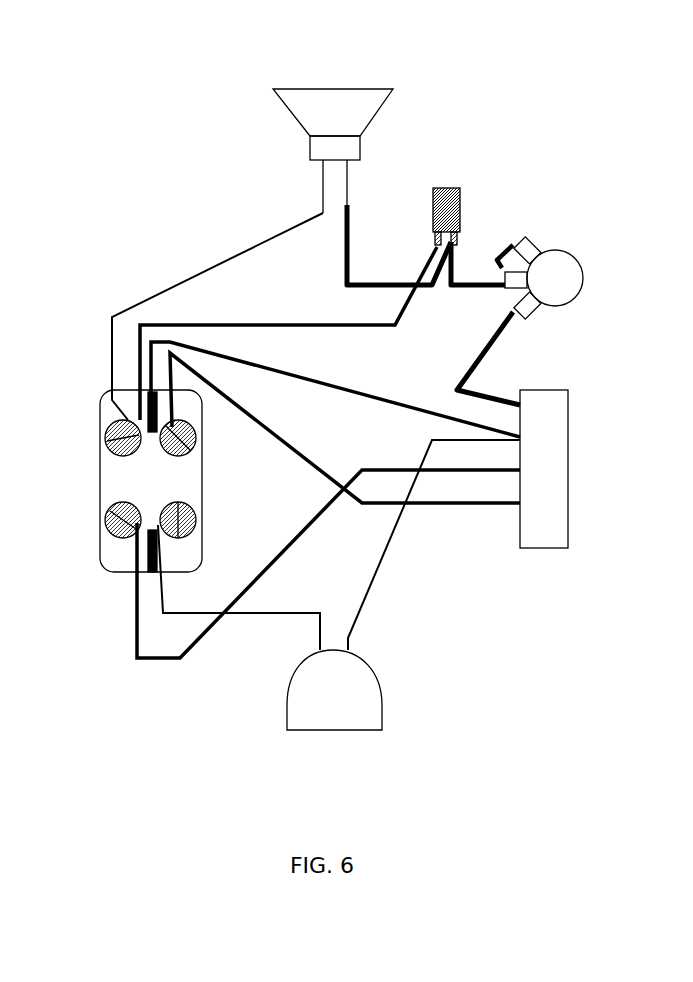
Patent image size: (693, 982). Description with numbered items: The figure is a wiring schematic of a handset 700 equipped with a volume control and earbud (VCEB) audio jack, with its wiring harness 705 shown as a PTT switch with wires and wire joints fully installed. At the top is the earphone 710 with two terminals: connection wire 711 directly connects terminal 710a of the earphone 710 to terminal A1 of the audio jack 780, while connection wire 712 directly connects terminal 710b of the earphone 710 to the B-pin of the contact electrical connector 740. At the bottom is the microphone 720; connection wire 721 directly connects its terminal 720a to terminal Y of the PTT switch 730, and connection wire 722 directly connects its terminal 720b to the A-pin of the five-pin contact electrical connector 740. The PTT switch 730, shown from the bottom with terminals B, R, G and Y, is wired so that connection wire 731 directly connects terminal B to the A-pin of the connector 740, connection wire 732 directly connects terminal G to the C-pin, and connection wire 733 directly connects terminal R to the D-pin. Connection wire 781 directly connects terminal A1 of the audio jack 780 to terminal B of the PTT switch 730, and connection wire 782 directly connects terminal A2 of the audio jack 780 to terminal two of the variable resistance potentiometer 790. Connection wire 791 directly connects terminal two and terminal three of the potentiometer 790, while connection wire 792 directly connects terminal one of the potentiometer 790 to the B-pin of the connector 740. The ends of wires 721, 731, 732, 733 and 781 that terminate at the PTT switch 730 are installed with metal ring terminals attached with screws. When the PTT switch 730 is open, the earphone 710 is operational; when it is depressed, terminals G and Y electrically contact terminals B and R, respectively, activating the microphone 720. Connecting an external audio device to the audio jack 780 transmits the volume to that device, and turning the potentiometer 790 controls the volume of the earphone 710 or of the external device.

The wiring diagram of headset system 700 is at (136, 118).
The cable harness 705 is at (210, 201).
The earphone 710 is at (333, 102).
The terminal of earphone 710a is at (374, 182).
The terminal of earphone 710b is at (296, 186).
The connection wire 711 is at (376, 245).
The connection wire 712 is at (217, 316).
The microphone 720 is at (334, 718).
The terminal of microphone 720a is at (289, 650).
The terminal of microphone 720b is at (378, 650).
The connection wire 721 is at (237, 587).
The connection wire 722 is at (428, 545).
The PTT switch 730 is at (187, 481).
The connection wire 731 is at (335, 389).
The connection wire 732 is at (328, 582).
The connection wire 733 is at (345, 428).
The 5-pin contact electrical connector 740 is at (563, 460).
The audio jack 780 is at (447, 192).
The connection wire 781 is at (288, 333).
The connection wire 782 is at (471, 297).
The variable resistance potentiometer 790 is at (559, 260).
The connection wire 791 is at (498, 240).
The connection wire 792 is at (466, 358).
The terminal of audio jack A1 is at (431, 243).
The terminal of audio jack A2 is at (466, 235).